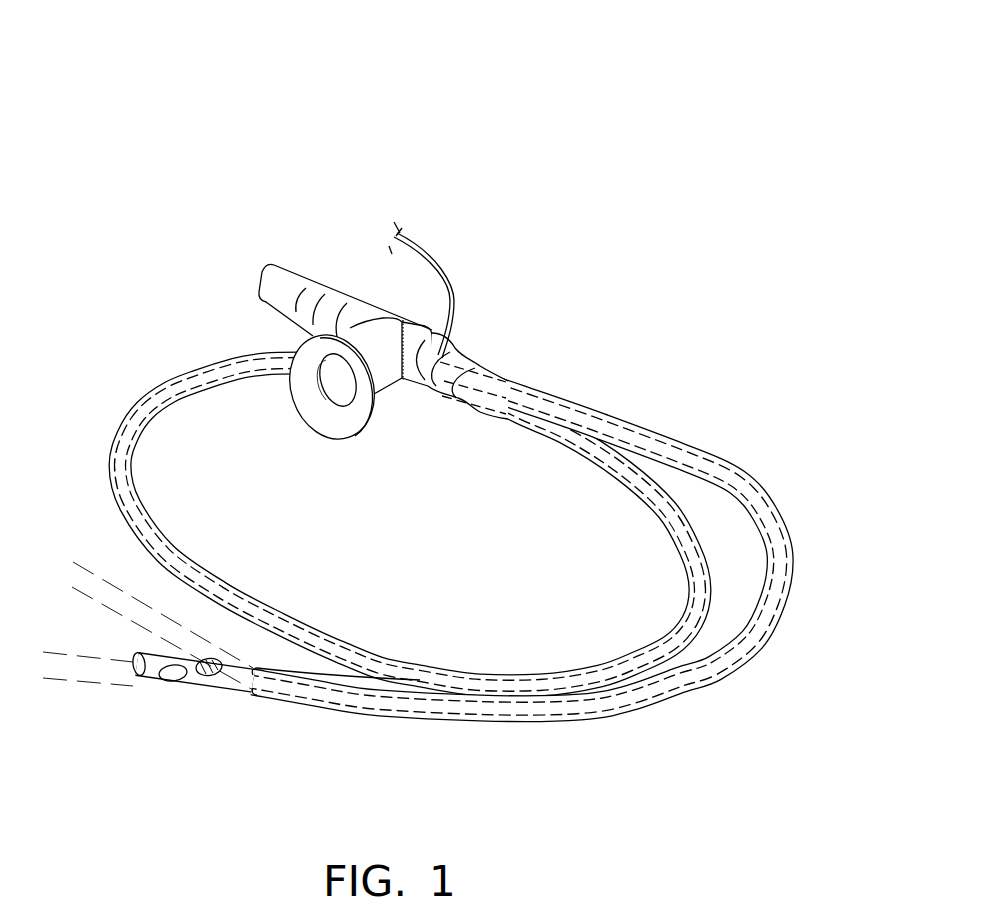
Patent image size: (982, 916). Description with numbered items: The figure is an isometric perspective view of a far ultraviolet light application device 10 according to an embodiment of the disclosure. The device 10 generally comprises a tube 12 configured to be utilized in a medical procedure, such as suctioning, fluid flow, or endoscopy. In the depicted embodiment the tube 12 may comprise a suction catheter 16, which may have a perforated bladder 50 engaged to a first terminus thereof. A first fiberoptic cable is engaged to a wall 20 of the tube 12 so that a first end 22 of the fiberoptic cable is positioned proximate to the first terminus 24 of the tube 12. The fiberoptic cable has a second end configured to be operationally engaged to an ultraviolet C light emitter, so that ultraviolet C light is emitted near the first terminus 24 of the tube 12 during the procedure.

The far ultraviolet light application device 10 is at (510, 147).
The tube 12 is at (524, 587).
The suction catheter 16 is at (524, 587).
The wall 20 is at (518, 733).
The first end 22 is at (636, 716).
The first terminus 24 is at (260, 745).
The perforated bladder 50 is at (192, 695).